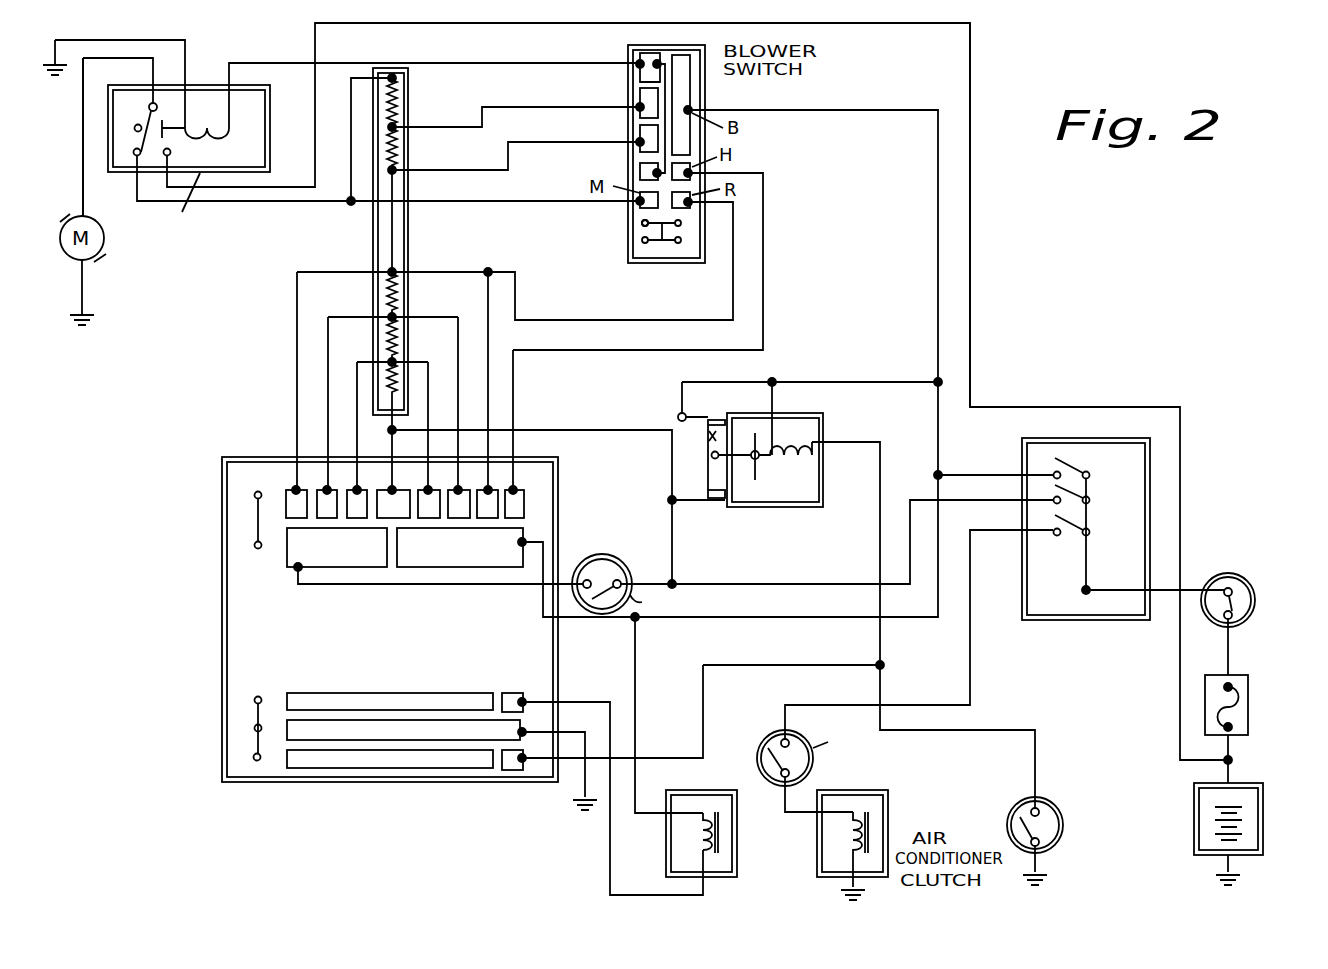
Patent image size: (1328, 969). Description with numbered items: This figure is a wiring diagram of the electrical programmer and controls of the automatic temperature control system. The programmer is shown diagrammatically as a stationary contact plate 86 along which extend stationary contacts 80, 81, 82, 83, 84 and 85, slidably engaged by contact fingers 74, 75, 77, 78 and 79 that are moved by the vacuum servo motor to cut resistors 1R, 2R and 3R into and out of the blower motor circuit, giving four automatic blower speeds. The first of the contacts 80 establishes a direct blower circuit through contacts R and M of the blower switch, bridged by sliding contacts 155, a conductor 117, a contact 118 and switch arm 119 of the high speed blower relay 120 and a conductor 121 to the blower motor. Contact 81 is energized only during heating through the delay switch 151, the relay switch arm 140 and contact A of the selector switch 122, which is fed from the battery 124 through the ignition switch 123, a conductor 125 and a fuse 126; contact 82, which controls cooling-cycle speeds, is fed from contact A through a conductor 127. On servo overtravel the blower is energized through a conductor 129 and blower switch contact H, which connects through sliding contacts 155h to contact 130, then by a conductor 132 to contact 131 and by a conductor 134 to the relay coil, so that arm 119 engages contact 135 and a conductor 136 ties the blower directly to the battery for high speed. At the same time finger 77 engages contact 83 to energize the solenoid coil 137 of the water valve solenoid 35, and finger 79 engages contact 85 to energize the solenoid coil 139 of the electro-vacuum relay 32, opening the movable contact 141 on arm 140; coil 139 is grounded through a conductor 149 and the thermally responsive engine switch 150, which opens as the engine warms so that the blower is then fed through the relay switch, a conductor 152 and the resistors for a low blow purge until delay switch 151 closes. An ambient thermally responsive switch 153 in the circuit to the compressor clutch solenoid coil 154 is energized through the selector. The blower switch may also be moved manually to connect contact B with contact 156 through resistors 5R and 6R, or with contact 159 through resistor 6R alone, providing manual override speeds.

The high speed blower relay 120 is at (201, 85).
The switch arm 119 is at (136, 128).
The contact 118 is at (135, 157).
The conductor 121 is at (83, 131).
The contact 135 is at (171, 152).
The conductor 136 is at (972, 264).
The resistor 6R is at (405, 103).
The resistor 5R is at (410, 152).
The resistor 3R is at (405, 297).
The resistor 2R is at (405, 343).
The resistor 1R is at (405, 386).
The conductor 134 is at (508, 108).
The conductor 117 is at (522, 203).
The conductor 129 is at (515, 388).
The conductor 152 is at (627, 410).
The contact 131 is at (653, 56).
The conductor 132 is at (657, 86).
The contact 159 is at (640, 96).
The contact 156 is at (640, 130).
The contact 130 is at (640, 170).
The sliding contacts 155 is at (643, 244).
The sliding contacts 155h is at (642, 224).
The electro-vacuum relay 32 is at (825, 424).
The relay switch arm 140 is at (710, 475).
The solenoid coil 139 is at (789, 464).
The conductor 149 is at (882, 456).
The movable contact 141 is at (878, 541).
The delay switch 151 is at (620, 548).
The conductor 127 is at (773, 620).
The stationary contact plate 86 is at (242, 615).
The stationary contacts 80 is at (292, 492).
The sliding contact finger 74 is at (254, 496).
The sliding contact finger 75 is at (260, 549).
The stationary contact 81 is at (354, 558).
The stationary contact 82 is at (461, 558).
The sliding contact finger 77 is at (262, 698).
The sliding contact finger 78 is at (255, 728).
The sliding contact finger 79 is at (253, 758).
The stationary contact 84 is at (412, 733).
The stationary contact 83 is at (507, 698).
The stationary contact 85 is at (507, 771).
The water valve solenoid 35 is at (738, 786).
The solenoid coil 137 is at (703, 838).
The ambient thermally responsive switch 153 is at (762, 742).
The solenoid coil 154 is at (850, 840).
The thermally responsive engine switch 150 is at (1047, 800).
The selector switch 122 is at (1077, 439).
The ignition switch 123 is at (1253, 591).
The fuse 126 is at (1250, 686).
The conductor 125 is at (1230, 750).
The battery 124 is at (1252, 782).